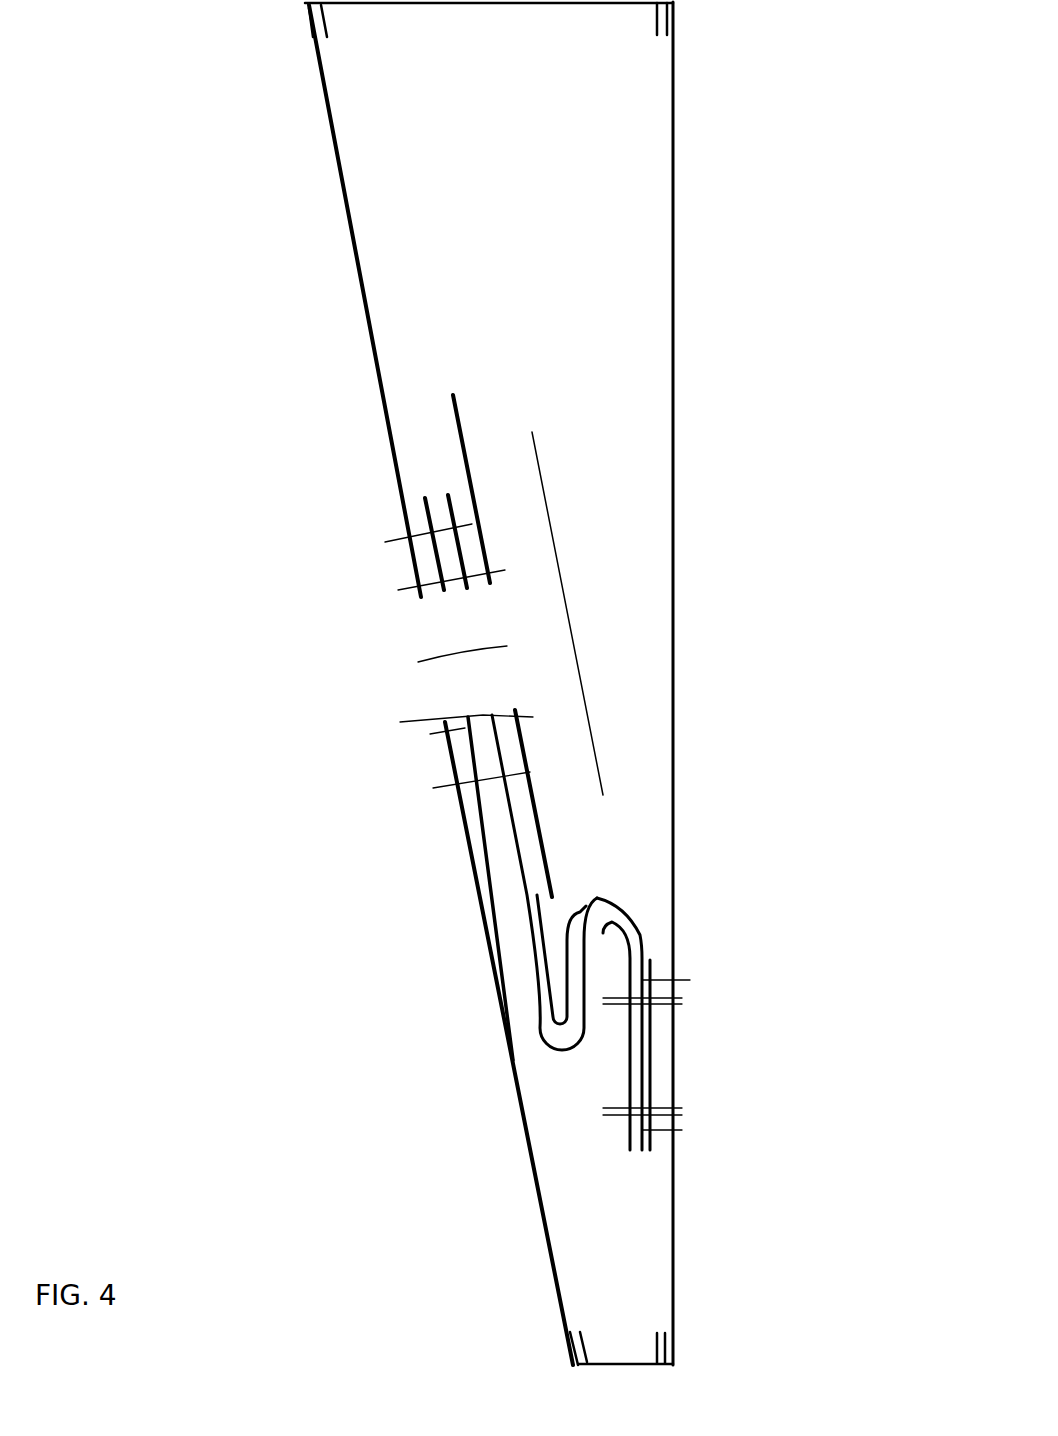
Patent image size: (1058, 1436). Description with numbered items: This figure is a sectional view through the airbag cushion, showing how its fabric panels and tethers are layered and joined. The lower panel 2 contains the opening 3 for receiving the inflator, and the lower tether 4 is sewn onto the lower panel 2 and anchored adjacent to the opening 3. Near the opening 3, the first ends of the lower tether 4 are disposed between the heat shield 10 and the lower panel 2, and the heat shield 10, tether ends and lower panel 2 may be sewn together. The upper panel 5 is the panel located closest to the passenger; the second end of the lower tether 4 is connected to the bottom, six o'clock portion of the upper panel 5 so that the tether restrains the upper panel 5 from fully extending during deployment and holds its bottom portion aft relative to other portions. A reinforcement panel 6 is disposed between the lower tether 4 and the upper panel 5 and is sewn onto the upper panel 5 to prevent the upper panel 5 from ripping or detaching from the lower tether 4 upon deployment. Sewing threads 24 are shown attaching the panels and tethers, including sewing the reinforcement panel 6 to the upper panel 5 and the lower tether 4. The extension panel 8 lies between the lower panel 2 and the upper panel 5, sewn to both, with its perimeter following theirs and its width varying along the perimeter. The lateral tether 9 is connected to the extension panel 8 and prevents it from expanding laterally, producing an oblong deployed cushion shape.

The lower panel 2 is at (376, 368).
The opening 3 is at (507, 646).
The lower tether 4 is at (400, 722).
The upper panel 5 is at (675, 150).
The reinforcement panel 6 is at (652, 1047).
The extension panel 8 is at (438, 3).
The lateral tether 9 is at (545, 505).
The heat shield 10 is at (460, 413).
The sewing threads 24 is at (398, 590).